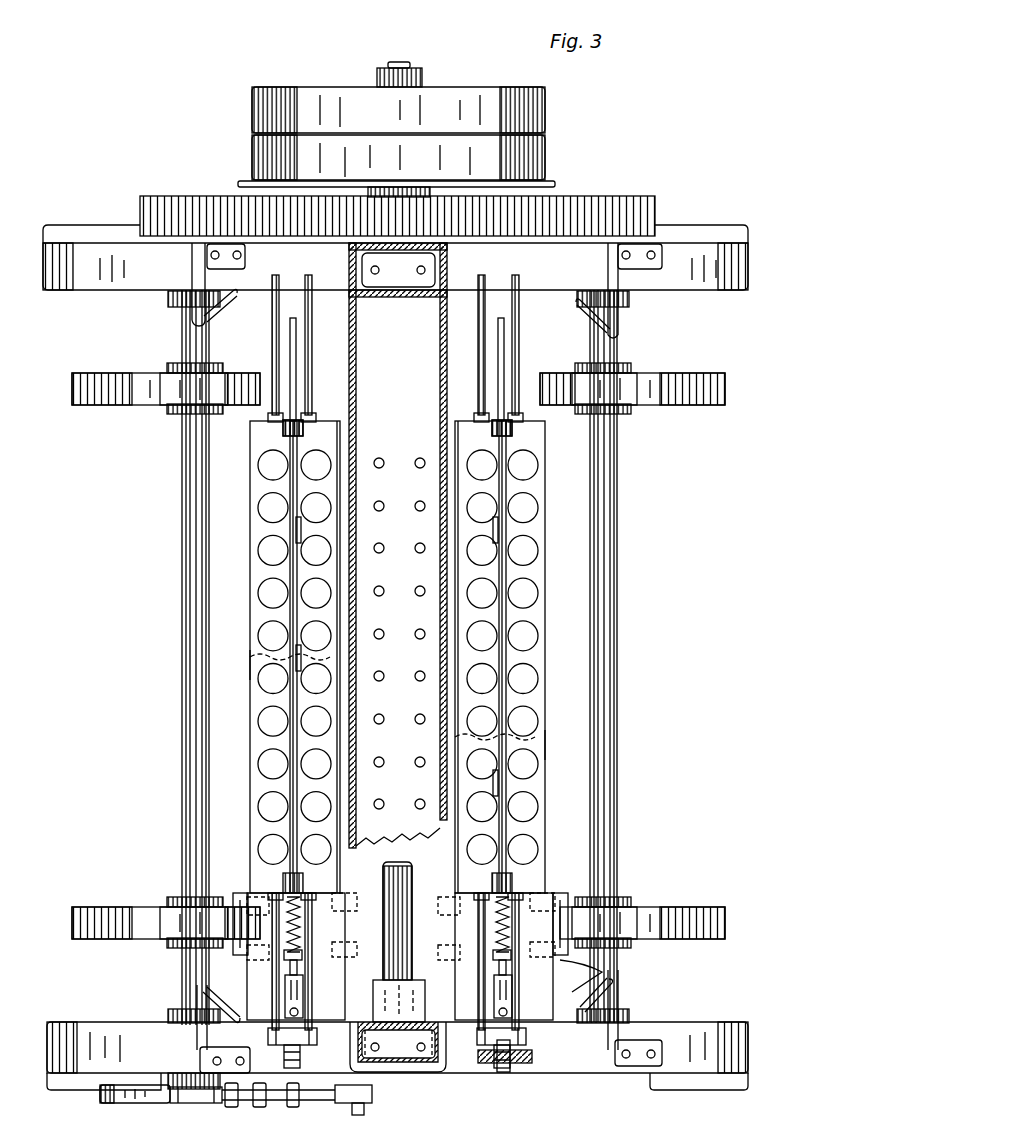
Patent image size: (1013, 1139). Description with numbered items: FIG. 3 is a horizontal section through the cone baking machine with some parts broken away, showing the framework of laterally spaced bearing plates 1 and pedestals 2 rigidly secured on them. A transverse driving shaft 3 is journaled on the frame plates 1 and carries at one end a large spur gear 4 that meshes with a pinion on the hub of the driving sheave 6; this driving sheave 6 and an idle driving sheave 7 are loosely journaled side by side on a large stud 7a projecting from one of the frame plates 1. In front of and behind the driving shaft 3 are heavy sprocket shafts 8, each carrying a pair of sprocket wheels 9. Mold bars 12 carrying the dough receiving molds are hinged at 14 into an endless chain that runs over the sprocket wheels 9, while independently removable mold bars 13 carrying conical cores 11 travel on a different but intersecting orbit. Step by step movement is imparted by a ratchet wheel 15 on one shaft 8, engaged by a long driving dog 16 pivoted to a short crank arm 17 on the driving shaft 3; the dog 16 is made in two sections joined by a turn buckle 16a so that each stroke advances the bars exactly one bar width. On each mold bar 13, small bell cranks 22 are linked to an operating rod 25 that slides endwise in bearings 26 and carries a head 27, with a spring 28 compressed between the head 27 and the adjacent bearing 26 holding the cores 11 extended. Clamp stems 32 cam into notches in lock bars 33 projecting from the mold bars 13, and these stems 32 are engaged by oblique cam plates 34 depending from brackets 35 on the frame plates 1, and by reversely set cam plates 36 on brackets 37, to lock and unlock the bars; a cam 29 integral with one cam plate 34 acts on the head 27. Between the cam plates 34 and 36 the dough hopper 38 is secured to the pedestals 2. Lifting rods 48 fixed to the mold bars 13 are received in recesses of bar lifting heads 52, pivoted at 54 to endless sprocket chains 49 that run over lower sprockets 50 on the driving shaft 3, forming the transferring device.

The bearing plates 1 is at (700, 252).
The pedestals 2 is at (437, 273).
The driving shaft 3 is at (412, 900).
The spur gear 4 is at (602, 196).
The driving sheave 6 is at (546, 158).
The idle driving sheave 7 is at (546, 110).
The stud 7a is at (422, 70).
The sprocket shafts 8 is at (182, 712).
The sprocket wheels 9 is at (125, 405).
The cores 11 is at (266, 603).
The mold bars 12 is at (250, 673).
The mold bars 13 is at (258, 568).
The hinge 14 is at (243, 894).
The ratchet wheel 15 is at (140, 1103).
The driving dog 16 is at (200, 1097).
The turn buckle 16a is at (278, 1110).
The crank arm 17 is at (365, 1105).
The bell cranks 22 is at (290, 525).
The operating rod 25 is at (290, 712).
The bearings 26 is at (262, 440).
The head 27 is at (297, 973).
The spring 28 is at (300, 930).
The cam 29 is at (600, 966).
The stems 32 is at (285, 1013).
The bars 33 is at (296, 363).
The cam plates 34 is at (577, 307).
The brackets 35 is at (618, 270).
The cam plates 36 is at (228, 312).
The brackets 37 is at (194, 278).
The hopper 38 is at (357, 433).
The lifting rods 48 is at (278, 280).
The sprocket chains 49 is at (505, 1075).
The lower sprockets 50 is at (495, 1070).
The bar lifting heads 52 is at (272, 1040).
The pivot 54 is at (285, 1060).